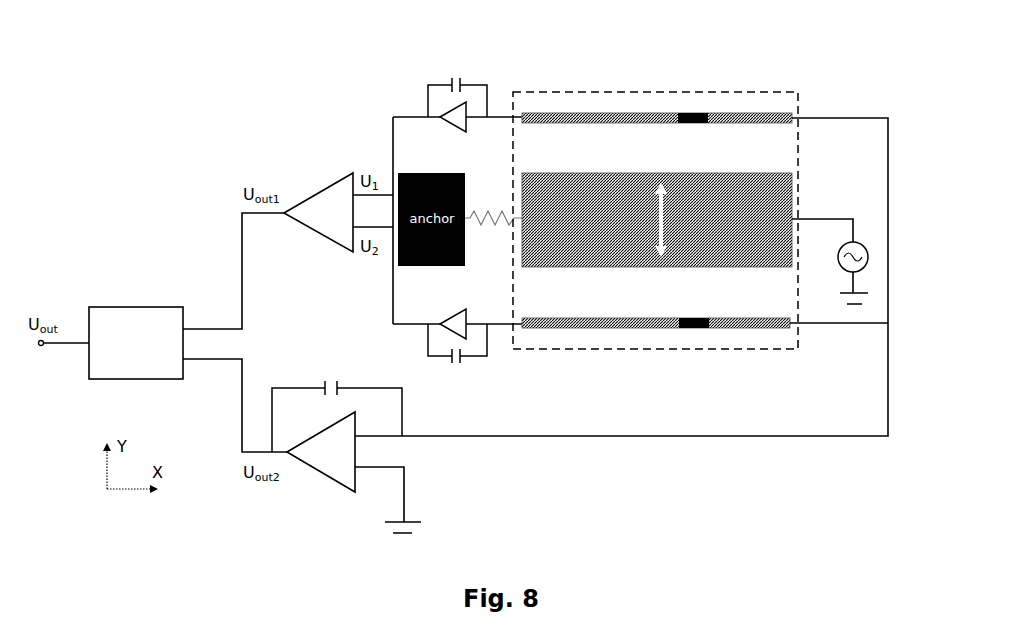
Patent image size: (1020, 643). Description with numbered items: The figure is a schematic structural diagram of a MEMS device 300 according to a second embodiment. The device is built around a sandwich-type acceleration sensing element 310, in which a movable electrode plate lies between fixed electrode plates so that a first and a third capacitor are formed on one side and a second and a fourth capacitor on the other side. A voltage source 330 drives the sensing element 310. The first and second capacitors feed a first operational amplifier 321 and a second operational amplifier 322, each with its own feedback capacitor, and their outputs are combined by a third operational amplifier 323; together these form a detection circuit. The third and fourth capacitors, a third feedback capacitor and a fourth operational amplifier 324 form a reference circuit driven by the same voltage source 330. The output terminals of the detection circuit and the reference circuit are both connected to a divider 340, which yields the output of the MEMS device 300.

The MEMS device 300 is at (243, 30).
The acceleration sensing element 310 is at (765, 94).
The first operational amplifier 321 is at (462, 133).
The second operational amplifier 322 is at (466, 308).
The third operational amplifier 323 is at (322, 188).
The fourth operational amplifier 324 is at (325, 476).
The voltage source 330 is at (864, 245).
The divider 340 is at (137, 307).